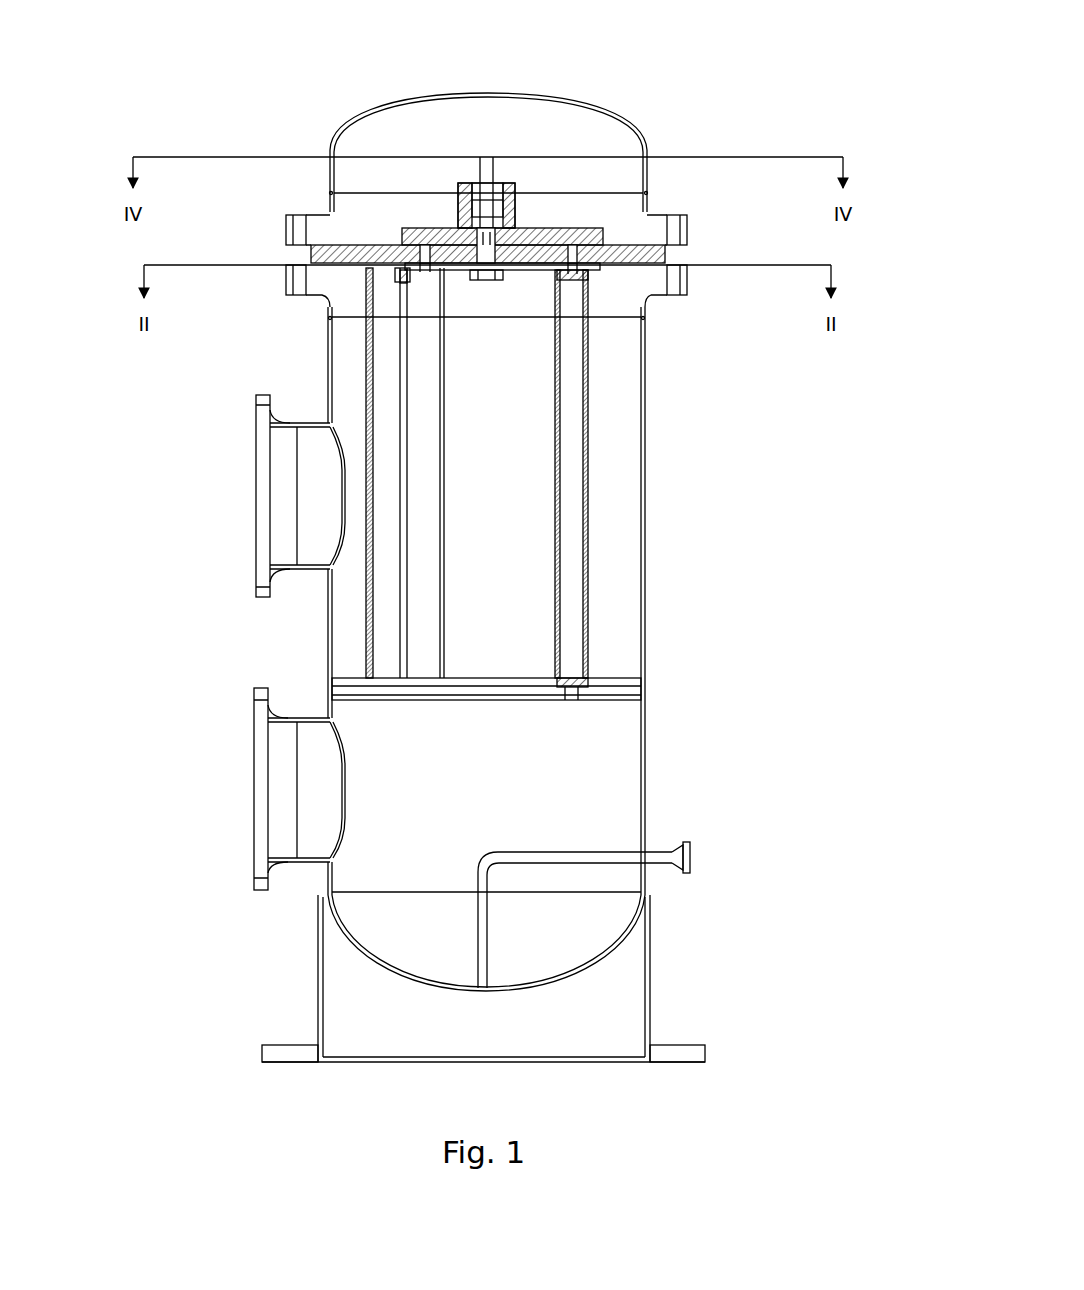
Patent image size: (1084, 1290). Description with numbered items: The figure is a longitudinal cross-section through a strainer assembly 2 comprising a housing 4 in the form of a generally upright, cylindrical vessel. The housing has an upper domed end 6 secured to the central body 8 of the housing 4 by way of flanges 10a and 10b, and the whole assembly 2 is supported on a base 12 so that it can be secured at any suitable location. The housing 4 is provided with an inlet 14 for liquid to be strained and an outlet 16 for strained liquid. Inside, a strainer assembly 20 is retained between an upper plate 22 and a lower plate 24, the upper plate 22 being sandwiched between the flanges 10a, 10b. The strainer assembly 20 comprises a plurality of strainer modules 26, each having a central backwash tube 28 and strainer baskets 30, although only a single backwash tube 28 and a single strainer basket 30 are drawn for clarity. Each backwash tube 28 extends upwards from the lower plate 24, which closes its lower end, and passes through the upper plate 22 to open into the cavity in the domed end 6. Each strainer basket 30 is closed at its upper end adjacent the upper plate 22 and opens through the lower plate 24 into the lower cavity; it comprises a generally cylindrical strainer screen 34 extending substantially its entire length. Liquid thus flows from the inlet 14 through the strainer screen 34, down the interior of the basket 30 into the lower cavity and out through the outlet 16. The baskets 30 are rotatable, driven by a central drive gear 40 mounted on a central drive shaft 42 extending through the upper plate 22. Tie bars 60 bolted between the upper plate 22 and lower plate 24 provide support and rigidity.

The strainer assembly 2 is at (728, 66).
The housing 4 is at (327, 663).
The upper domed end 6 is at (576, 93).
The central body 8 is at (326, 346).
The flange 10a is at (286, 231).
The flange 10b is at (286, 275).
The base 12 is at (318, 1000).
The inlet 14 is at (270, 563).
The outlet 16 is at (268, 843).
The strainer assembly 20 is at (533, 531).
The upper plate 22 is at (689, 257).
The lower plate 24 is at (625, 693).
The strainer module 26 is at (340, 398).
The backwash tube 28 is at (385, 493).
The strainer basket 30 is at (425, 632).
The strainer screen 34 is at (438, 440).
The central drive gear 40 is at (513, 271).
The central drive shaft 42 is at (488, 168).
The tie bar 60 is at (572, 622).